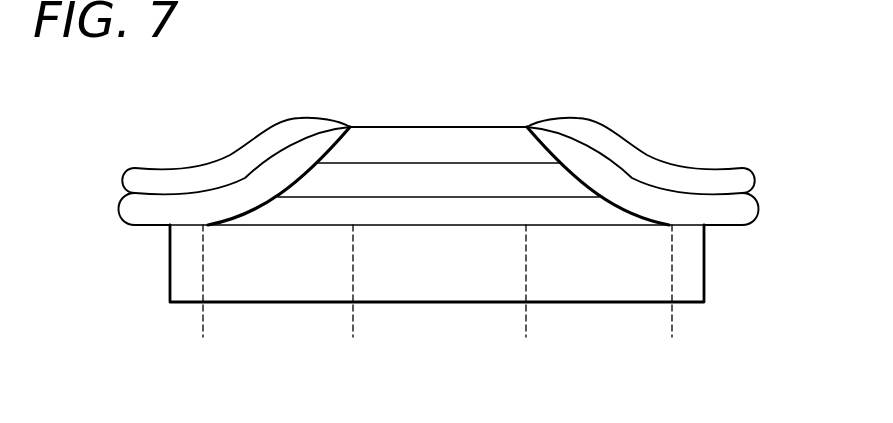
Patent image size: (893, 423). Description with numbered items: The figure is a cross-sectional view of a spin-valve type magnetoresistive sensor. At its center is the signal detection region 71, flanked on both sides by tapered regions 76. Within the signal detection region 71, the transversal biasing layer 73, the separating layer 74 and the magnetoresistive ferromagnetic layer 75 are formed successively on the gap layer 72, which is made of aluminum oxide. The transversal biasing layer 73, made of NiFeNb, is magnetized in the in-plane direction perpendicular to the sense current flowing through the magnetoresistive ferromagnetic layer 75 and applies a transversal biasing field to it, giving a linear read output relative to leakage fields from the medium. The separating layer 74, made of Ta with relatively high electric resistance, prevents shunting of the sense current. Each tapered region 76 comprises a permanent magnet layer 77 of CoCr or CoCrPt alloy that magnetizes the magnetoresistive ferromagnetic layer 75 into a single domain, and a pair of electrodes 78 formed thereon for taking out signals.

The signal detection region 71 is at (526, 340).
The gap layer 72 is at (705, 277).
The transversal biasing layer 73 is at (475, 205).
The separating layer 74 is at (418, 168).
The magnetoresistive ferromagnetic layer 75 is at (377, 137).
The tapered region 76 is at (353, 340).
The permanent magnet layer 77 is at (243, 190).
The electrodes 78 is at (278, 133).